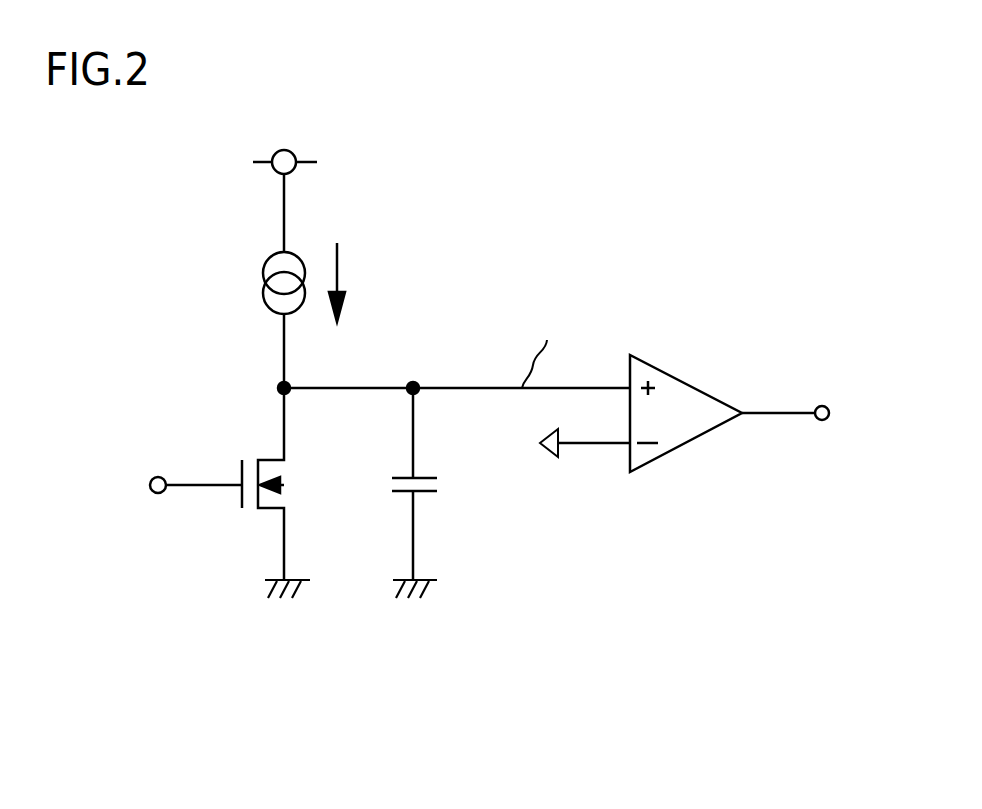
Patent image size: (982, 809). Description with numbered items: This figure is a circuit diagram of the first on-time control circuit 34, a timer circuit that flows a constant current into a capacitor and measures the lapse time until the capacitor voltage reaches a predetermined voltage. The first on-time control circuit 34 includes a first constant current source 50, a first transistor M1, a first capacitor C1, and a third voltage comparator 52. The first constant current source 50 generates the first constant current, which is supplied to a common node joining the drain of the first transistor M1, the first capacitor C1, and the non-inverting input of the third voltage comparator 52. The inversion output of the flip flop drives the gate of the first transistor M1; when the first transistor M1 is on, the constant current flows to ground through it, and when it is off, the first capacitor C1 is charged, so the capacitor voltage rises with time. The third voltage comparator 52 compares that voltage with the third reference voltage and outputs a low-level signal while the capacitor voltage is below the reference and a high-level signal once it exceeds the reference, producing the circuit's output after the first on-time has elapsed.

The first on-time control circuit 34 is at (515, 720).
The first constant current source 50 is at (262, 282).
The third voltage comparator 52 is at (688, 385).
The first transistor M1 is at (252, 522).
The first capacitor C1 is at (440, 485).